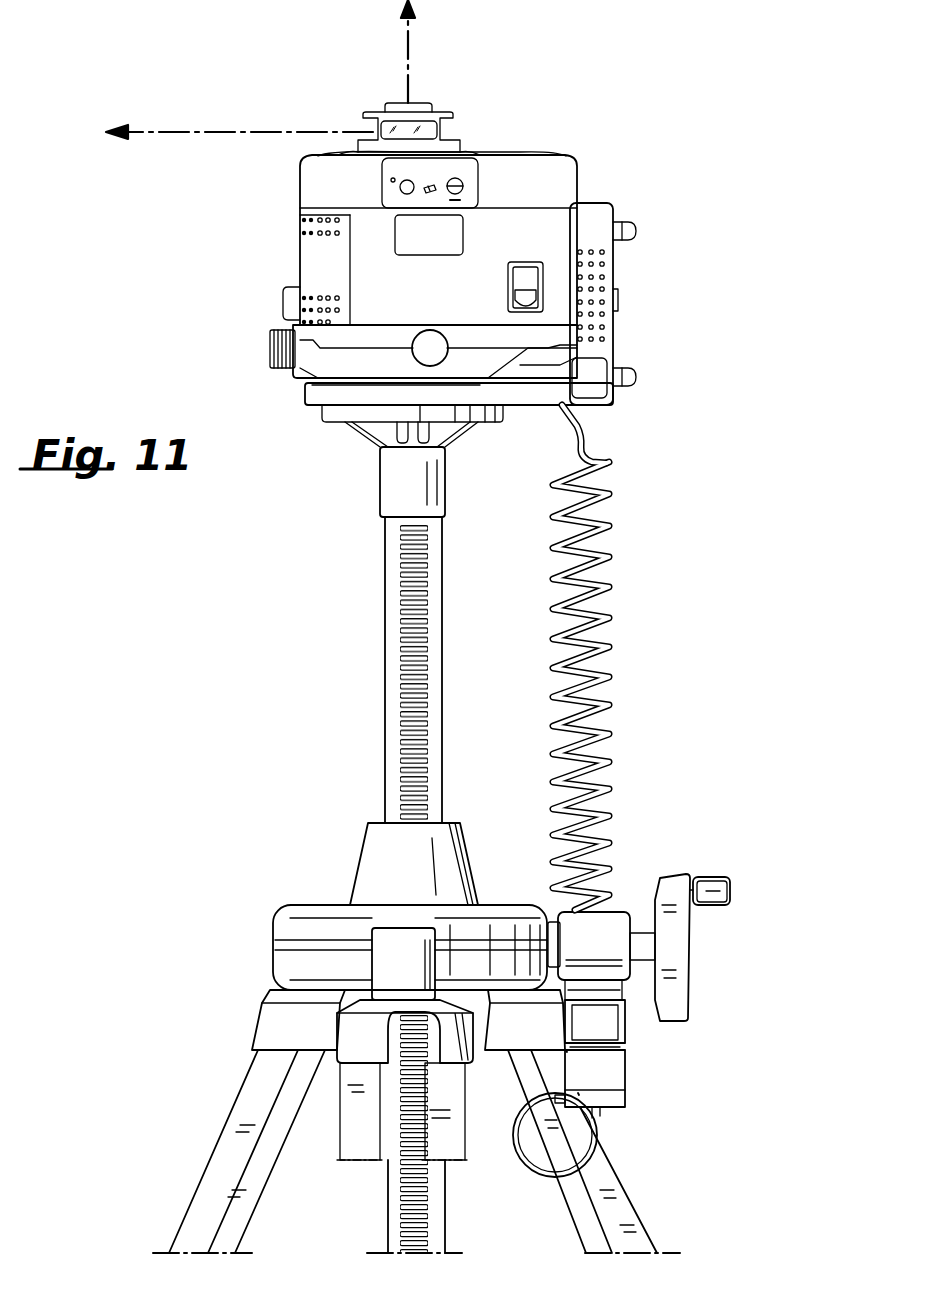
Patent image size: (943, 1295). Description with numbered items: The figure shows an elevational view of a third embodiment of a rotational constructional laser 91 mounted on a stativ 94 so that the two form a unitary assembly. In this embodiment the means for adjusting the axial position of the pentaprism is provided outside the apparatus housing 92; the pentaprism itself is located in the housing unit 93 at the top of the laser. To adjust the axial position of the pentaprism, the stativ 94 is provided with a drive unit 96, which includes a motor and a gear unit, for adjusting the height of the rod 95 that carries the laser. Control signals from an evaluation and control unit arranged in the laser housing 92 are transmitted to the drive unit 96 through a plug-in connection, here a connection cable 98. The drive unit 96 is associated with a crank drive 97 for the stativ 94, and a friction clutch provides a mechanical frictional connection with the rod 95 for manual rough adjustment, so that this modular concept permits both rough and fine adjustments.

The rotational constructional laser 91 is at (258, 256).
The apparatus housing 92 is at (541, 232).
The housing unit 93 is at (452, 112).
The stativ 94 is at (322, 846).
The rod 95 is at (400, 598).
The drive unit 96 is at (610, 982).
The crank drive 97 is at (675, 950).
The connection cable 98 is at (605, 648).